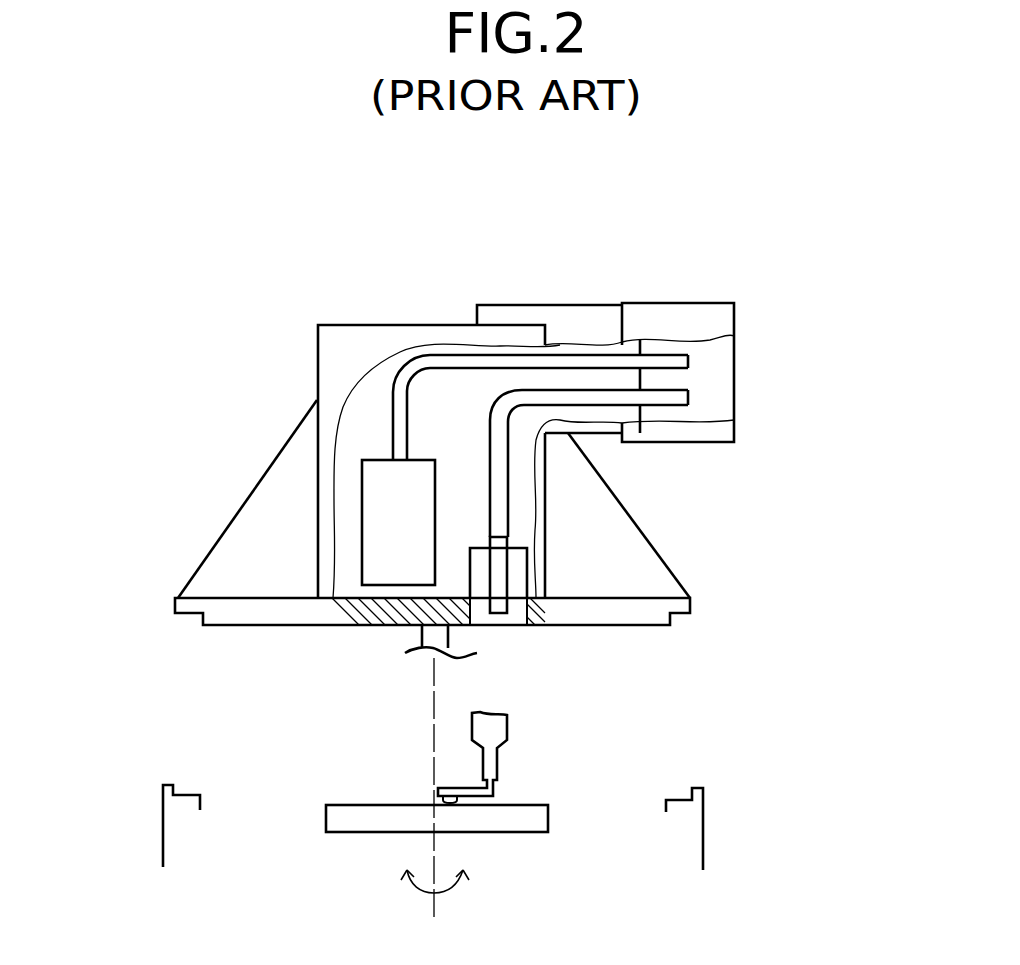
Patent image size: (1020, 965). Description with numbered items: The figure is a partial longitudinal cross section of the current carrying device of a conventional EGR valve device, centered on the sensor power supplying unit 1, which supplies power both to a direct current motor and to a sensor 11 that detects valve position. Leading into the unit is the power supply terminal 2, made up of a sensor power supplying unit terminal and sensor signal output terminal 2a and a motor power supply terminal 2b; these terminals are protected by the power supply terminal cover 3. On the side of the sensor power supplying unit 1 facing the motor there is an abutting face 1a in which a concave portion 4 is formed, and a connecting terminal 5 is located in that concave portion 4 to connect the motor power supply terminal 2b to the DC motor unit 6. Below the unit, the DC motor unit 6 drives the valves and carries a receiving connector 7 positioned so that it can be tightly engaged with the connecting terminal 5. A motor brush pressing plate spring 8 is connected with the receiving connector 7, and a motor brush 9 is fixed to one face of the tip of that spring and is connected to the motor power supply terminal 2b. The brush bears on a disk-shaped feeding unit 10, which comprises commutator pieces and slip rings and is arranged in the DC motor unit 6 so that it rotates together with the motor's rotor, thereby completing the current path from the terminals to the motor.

The sensor power supplying unit 1 is at (432, 277).
The abutting face 1a is at (630, 625).
The power supply terminal 2 is at (649, 433).
The sensor power supplying unit terminal and sensor signal output terminal 2a is at (688, 357).
The motor power supply terminal 2b is at (688, 400).
The power supply terminal cover 3 is at (666, 303).
The concave portion 4 is at (522, 625).
The connecting terminal 5 is at (501, 625).
The DC motor unit 6 is at (163, 810).
The receiving connector 7 is at (498, 764).
The motor brush pressing plate spring 8 is at (480, 800).
The motor brush 9 is at (453, 805).
The disk-shaped feeding unit 10 is at (358, 832).
The sensor 11 is at (382, 563).